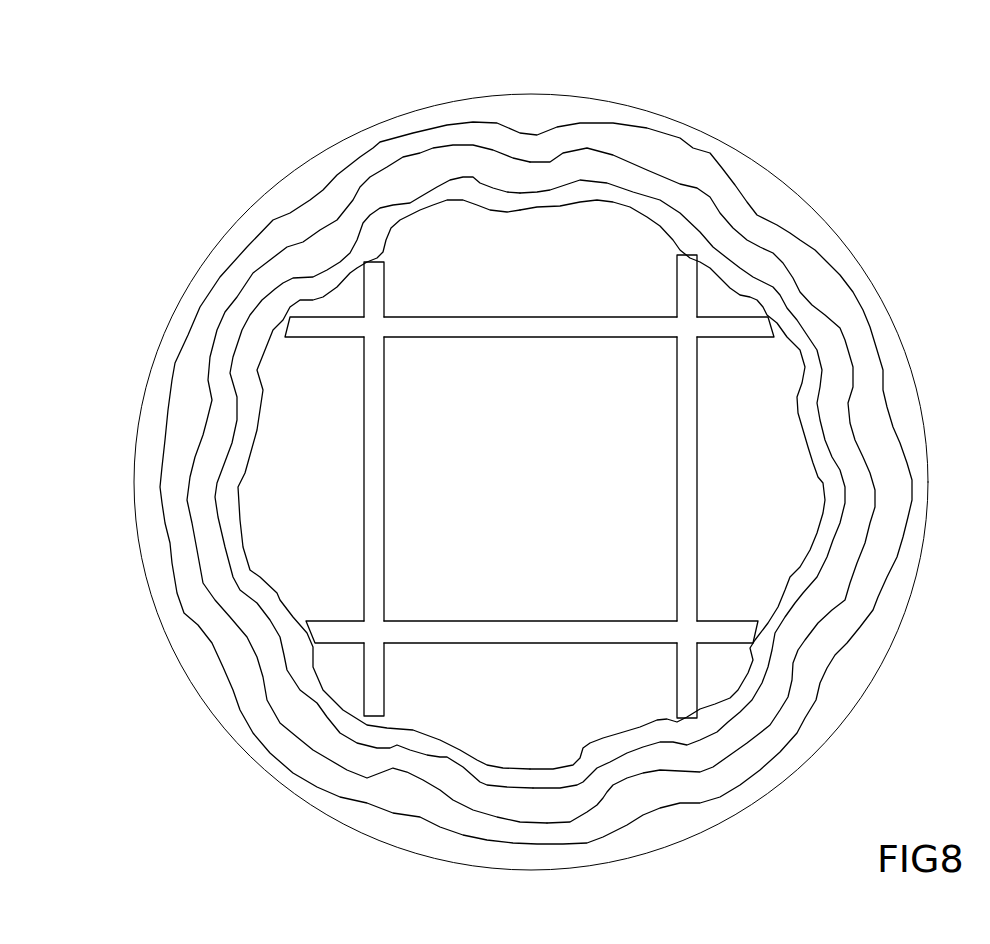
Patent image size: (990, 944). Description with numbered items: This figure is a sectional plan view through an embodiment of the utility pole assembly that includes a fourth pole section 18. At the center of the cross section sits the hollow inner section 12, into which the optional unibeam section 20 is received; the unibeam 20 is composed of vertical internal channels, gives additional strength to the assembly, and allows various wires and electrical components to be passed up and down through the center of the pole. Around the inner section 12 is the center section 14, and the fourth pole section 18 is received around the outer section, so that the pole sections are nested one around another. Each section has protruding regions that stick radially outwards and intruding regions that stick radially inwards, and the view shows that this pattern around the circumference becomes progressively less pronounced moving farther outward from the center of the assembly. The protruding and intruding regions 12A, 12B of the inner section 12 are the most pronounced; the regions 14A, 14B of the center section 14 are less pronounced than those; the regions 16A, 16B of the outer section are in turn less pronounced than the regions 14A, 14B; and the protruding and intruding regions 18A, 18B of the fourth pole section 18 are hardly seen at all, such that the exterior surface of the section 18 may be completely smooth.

The inner section 12 is at (531, 484).
The protruding regions 12A is at (632, 210).
The intruding regions 12B is at (533, 205).
The center section 14 is at (594, 412).
The protruding regions 14A is at (647, 180).
The intruding regions 14B is at (502, 160).
The protruding regions 16A is at (648, 150).
The intruding regions 16B is at (527, 143).
The fourth pole section 18 is at (522, 482).
The protruding regions 18A is at (190, 662).
The intruding regions 18B is at (240, 747).
The unibeam section 20 is at (675, 483).